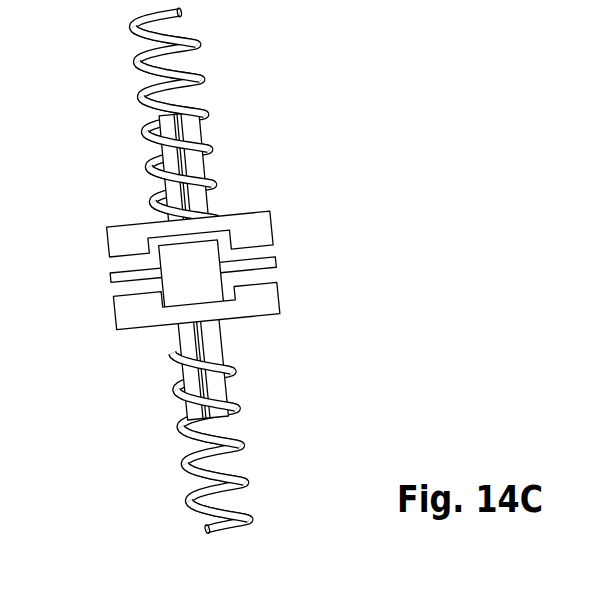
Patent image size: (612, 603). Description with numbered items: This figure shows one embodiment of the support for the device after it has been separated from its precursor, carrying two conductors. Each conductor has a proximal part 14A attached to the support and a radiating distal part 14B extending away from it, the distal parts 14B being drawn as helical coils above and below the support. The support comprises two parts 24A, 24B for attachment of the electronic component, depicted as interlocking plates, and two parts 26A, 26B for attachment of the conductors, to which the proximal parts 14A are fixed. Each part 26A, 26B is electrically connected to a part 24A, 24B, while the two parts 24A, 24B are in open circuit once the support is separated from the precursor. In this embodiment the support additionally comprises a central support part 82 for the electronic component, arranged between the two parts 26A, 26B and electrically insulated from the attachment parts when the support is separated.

The proximal part 14A is at (152, 210).
The radiating distal part 14B is at (189, 271).
The part for attachment of the electronic component 24A is at (258, 230).
The part for attachment of the electronic component 24B is at (266, 295).
The part for attachment of the conductor 26A is at (190, 135).
The part for attachment of the conductor 26B is at (218, 392).
The central support part 82 is at (168, 260).